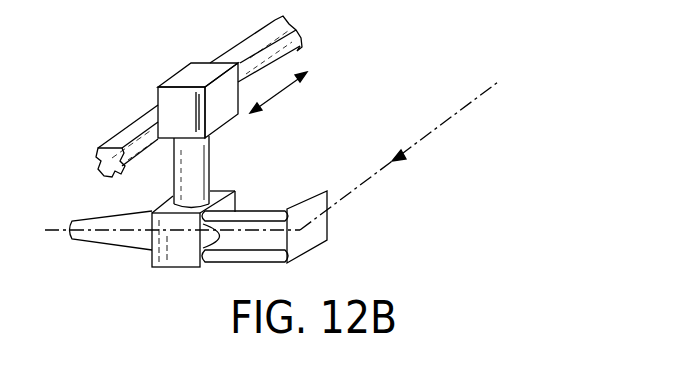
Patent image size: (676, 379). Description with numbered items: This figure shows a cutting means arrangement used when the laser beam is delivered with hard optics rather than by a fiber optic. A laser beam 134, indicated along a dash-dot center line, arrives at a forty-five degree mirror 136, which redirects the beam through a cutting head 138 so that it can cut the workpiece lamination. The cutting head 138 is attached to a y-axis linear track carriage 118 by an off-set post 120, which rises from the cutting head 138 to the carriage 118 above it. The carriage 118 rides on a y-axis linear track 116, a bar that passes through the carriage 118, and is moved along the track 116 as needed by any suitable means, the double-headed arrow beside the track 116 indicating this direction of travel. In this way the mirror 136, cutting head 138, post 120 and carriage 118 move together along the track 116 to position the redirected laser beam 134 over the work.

The y-axis linear track 116 is at (267, 28).
The y-axis linear track carriage 118 is at (184, 68).
The off-set post 120 is at (214, 167).
The laser beam 134 is at (413, 144).
The 45° mirror 136 is at (330, 237).
The cutting head 138 is at (174, 268).